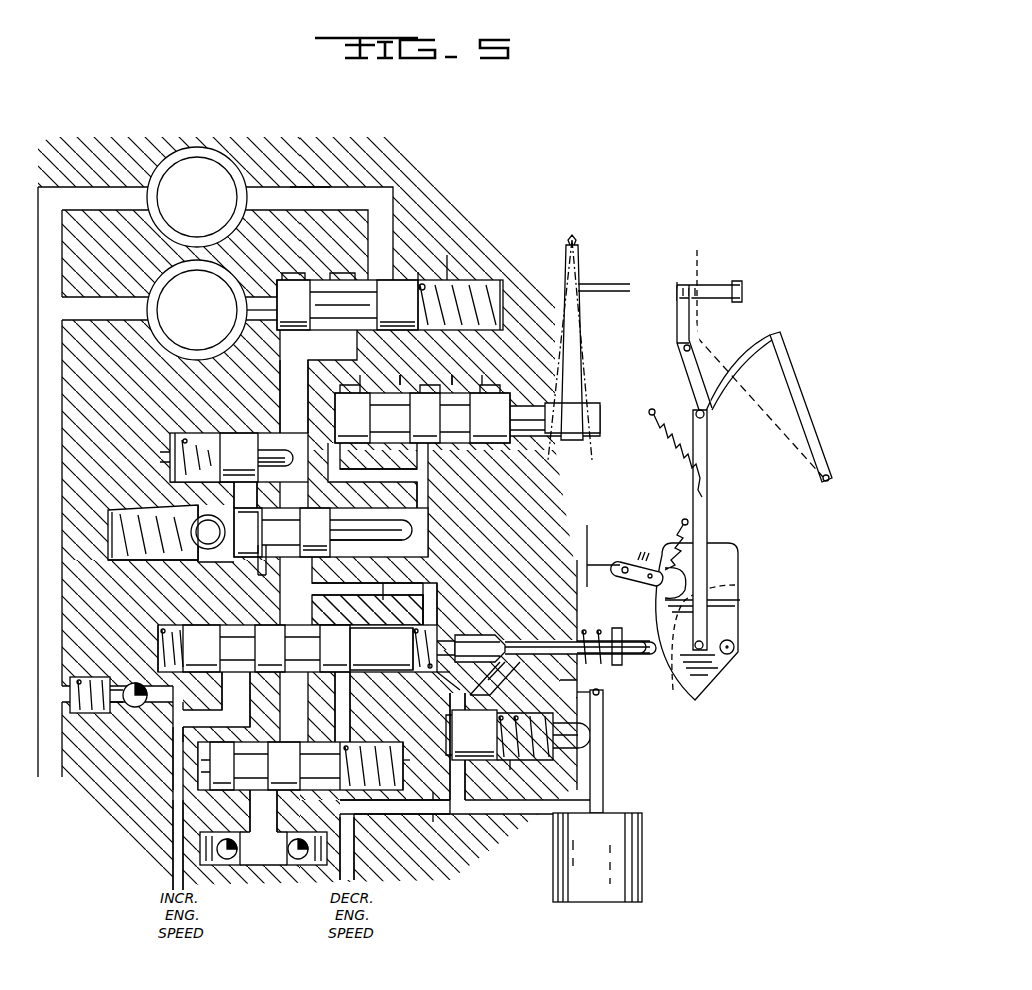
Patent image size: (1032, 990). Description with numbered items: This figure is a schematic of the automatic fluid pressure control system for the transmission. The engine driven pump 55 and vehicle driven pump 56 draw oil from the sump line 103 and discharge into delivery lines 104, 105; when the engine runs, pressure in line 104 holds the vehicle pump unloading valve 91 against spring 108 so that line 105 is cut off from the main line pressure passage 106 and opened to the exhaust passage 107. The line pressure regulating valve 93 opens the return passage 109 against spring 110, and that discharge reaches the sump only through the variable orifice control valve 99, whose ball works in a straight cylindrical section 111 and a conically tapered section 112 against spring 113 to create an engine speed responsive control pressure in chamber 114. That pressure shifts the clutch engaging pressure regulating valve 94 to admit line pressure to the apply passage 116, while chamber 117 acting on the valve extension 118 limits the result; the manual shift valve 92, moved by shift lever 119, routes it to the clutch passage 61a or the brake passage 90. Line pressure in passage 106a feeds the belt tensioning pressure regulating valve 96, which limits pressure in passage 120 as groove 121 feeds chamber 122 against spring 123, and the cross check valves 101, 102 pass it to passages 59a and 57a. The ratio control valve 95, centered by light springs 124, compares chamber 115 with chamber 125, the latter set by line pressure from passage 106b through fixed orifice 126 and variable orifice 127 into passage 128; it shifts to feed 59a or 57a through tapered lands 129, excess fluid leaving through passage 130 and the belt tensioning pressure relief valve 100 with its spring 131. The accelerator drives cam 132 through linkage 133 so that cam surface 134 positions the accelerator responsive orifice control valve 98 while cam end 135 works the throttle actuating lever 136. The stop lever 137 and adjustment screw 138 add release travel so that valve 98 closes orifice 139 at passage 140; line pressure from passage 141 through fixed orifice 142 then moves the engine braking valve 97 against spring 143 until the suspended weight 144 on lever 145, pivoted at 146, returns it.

The engine driven pump 55 is at (197, 310).
The vehicle driven pump 56 is at (197, 197).
The passage 57a is at (355, 868).
The passage 59a is at (175, 866).
The clutch passage 61a is at (402, 376).
The brake passage 90 is at (465, 365).
The vehicle pump unloading valve 91 is at (390, 301).
The manual shift valve 92 is at (467, 396).
The line pressure regulating valve 93 is at (227, 457).
The clutch engaging pressure regulating valve 94 is at (331, 532).
The ratio control valve 95 is at (306, 648).
The belt tensioning pressure regulating valve 96 is at (300, 766).
The engine braking valve 97 is at (518, 735).
The accelerator responsive orifice control valve 98 is at (555, 648).
The variable orifice control valve 99 is at (208, 532).
The belt tensioning pressure relief valve 100 is at (135, 708).
The cross check valve 101 is at (233, 866).
The cross check valve 102 is at (288, 866).
The sump line 103 is at (50, 405).
The delivery line 104 is at (270, 314).
The delivery line 105 is at (297, 196).
The main line pressure passage 106 is at (293, 386).
The line pressure passage 106a is at (350, 714).
The line pressure passage 106b is at (318, 590).
The exhaust passage 107 is at (470, 278).
The spring 108 is at (490, 322).
The main engine pump discharge return passage 109 is at (236, 500).
The spring 110 is at (190, 440).
The short straight cylindrical section 111 is at (200, 560).
The conically tapered section 112 is at (160, 562).
The spring 113 is at (124, 514).
The chamber 114 is at (258, 566).
The chamber 115 is at (160, 641).
The clutch or brake apply passage 116 is at (428, 477).
The chamber 117 is at (428, 527).
The valve extension 118 is at (428, 553).
The shift lever 119 is at (575, 350).
The passage 120 is at (262, 812).
The groove 121 is at (220, 778).
The chamber 122 is at (200, 760).
The spring 123 is at (368, 752).
The light springs 124 is at (165, 662).
The chamber 125 is at (413, 650).
The fixed orifice 126 is at (392, 590).
The variable orifice 127 is at (452, 684).
The passage 128 is at (455, 695).
The tapered lands 129 is at (268, 625).
The passage 130 is at (175, 705).
The spring 131 is at (100, 714).
The cam 132 is at (742, 625).
The linkage 133 is at (708, 475).
The cam surface 134 is at (652, 625).
The cam end 135 is at (665, 592).
The throttle actuating lever 136 is at (640, 582).
The stop lever 137 is at (698, 380).
The adjustment screw / engine braking cam surface 138 is at (737, 290).
The orifice 139 is at (500, 665).
The passage 140 is at (496, 682).
The passage 141 is at (406, 808).
The fixed orifice 142 is at (443, 810).
The spring 143 is at (532, 760).
The suspended weight 144 is at (602, 892).
The lever 145 is at (603, 775).
The pivot 146 is at (600, 692).